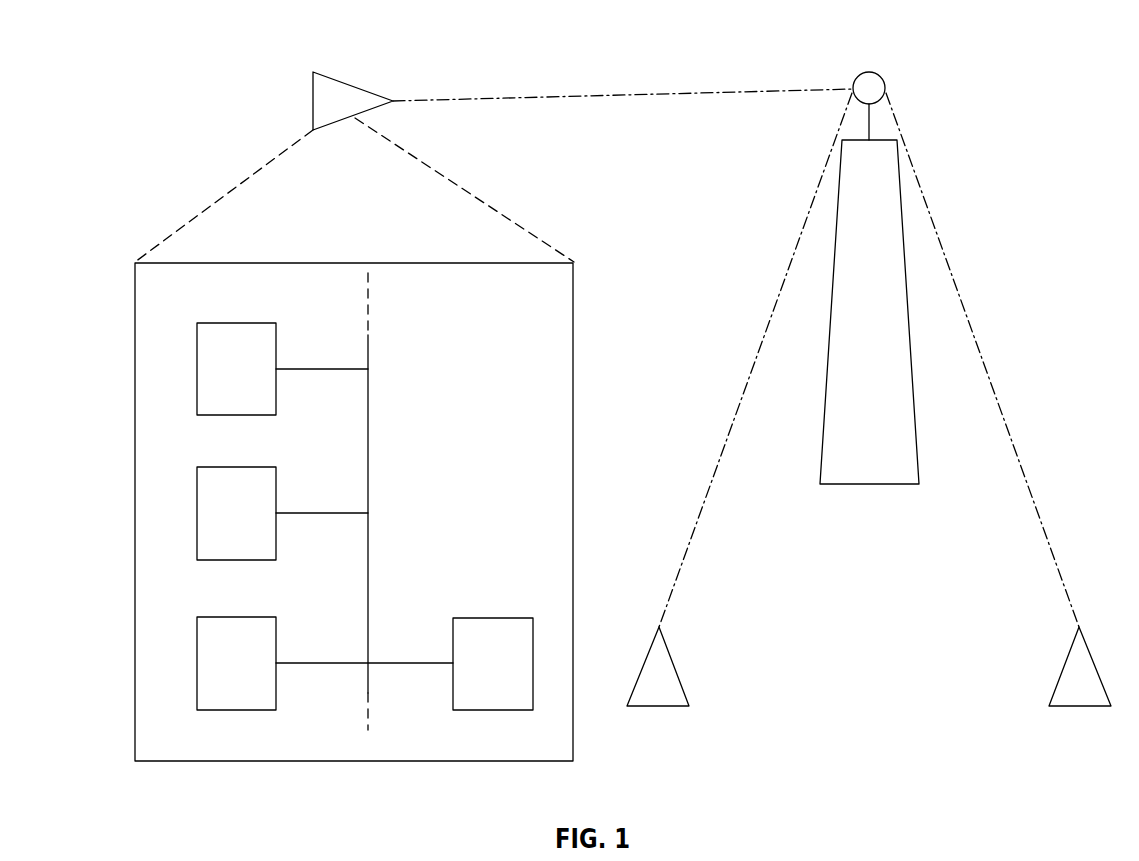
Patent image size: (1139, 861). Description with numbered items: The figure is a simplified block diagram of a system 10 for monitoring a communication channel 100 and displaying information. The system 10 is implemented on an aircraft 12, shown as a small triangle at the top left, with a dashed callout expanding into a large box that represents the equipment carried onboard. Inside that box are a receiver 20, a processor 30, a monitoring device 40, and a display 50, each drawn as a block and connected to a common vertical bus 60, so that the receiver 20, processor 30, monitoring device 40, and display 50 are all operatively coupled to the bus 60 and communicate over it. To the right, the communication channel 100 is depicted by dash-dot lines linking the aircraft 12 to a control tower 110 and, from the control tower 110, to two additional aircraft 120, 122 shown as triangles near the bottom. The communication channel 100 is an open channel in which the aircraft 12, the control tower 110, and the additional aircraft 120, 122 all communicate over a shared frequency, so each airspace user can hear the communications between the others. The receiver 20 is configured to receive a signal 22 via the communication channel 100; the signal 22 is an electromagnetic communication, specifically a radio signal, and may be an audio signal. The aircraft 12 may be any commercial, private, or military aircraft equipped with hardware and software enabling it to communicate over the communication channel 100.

The system 10 is at (156, 120).
The aircraft 12 is at (355, 87).
The receiver 20 is at (227, 322).
The signal 22 is at (523, 97).
The processor 30 is at (227, 466).
The monitoring device 40 is at (227, 616).
The display 50 is at (500, 617).
The bus 60 is at (369, 412).
The communication channel 100 is at (685, 92).
The control tower 110 is at (884, 80).
The additional aircraft 120 is at (658, 707).
The additional aircraft 122 is at (1079, 707).